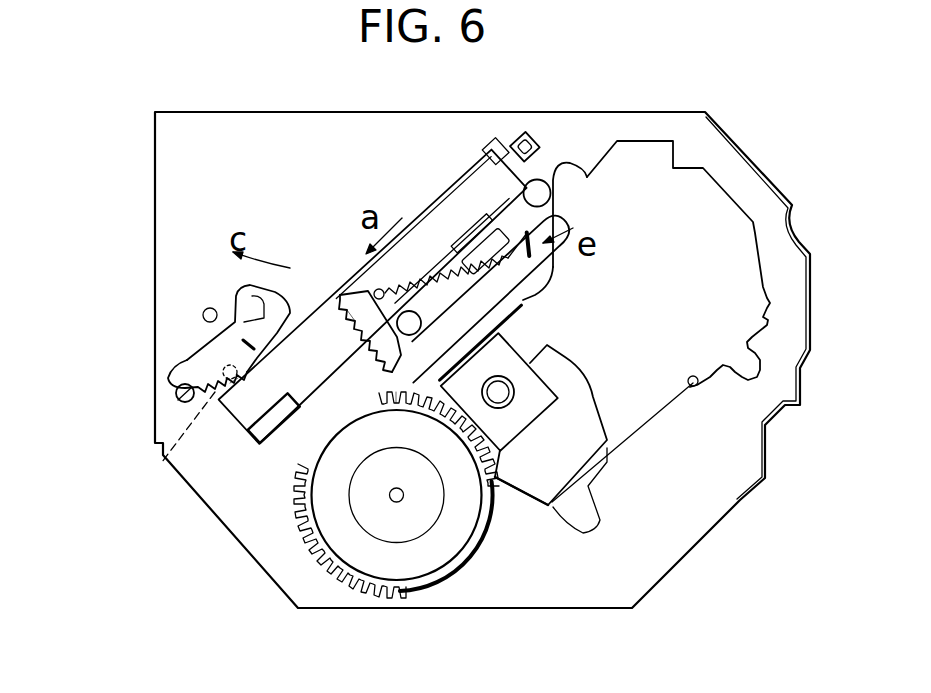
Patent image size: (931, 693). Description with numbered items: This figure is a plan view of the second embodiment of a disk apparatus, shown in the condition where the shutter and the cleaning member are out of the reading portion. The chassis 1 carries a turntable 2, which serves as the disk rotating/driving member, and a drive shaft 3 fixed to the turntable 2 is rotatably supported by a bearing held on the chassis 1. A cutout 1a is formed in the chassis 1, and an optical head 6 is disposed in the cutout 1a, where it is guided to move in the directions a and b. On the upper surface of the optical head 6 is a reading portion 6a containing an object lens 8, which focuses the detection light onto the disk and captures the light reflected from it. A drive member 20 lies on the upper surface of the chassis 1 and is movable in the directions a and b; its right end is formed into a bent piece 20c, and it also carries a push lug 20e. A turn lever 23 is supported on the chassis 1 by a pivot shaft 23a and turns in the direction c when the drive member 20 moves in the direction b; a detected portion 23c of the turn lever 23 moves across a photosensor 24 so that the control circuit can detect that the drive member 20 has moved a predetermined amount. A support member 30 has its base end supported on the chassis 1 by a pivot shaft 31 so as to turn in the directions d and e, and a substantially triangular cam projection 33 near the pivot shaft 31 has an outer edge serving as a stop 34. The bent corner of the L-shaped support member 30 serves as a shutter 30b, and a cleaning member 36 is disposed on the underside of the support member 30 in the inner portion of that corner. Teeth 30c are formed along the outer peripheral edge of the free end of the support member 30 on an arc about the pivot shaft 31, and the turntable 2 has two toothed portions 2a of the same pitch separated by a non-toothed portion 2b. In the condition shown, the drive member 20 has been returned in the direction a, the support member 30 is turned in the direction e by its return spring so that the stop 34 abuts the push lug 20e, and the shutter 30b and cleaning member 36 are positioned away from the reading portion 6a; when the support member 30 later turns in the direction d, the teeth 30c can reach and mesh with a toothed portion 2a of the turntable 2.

The chassis 1 is at (542, 593).
The cutout 1a is at (710, 372).
The turntable 2 is at (345, 530).
The toothed portion 2a is at (503, 460).
The non-toothed portion 2b is at (313, 443).
The drive shaft 3 is at (398, 502).
The optical head 6 is at (577, 432).
The reading portion 6a is at (510, 378).
The object lens 8 is at (500, 380).
The drive member 20 is at (307, 370).
The bent piece 20c is at (527, 130).
The push lug 20e is at (510, 233).
The turn lever 23 is at (213, 358).
The pivot shaft 23a is at (168, 455).
The detected portion 23c is at (187, 390).
The photosensor 24 is at (176, 397).
The support member 30 is at (527, 287).
The shutter 30b is at (465, 533).
The teeth 30c is at (325, 300).
The pivot shaft 31 is at (545, 190).
The cam projection 33 is at (562, 225).
The stop 34 is at (527, 290).
The cleaning member 36 is at (397, 380).